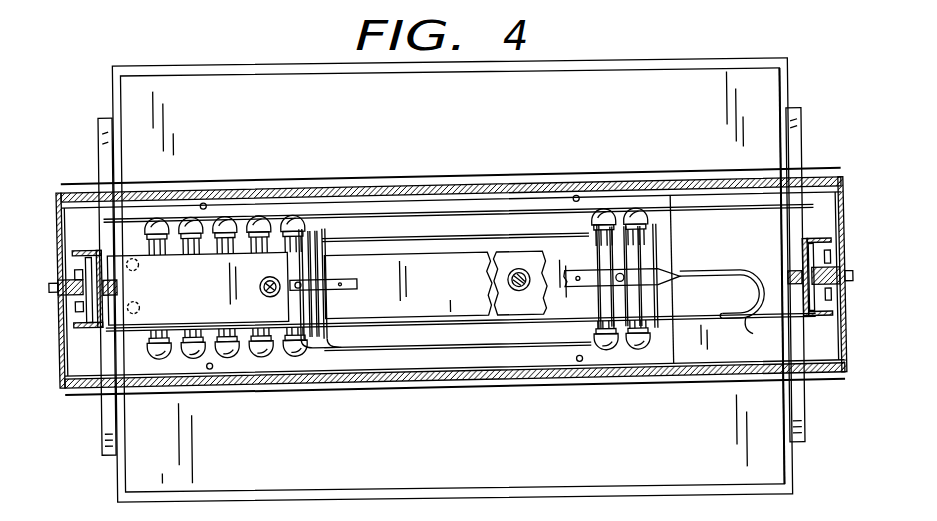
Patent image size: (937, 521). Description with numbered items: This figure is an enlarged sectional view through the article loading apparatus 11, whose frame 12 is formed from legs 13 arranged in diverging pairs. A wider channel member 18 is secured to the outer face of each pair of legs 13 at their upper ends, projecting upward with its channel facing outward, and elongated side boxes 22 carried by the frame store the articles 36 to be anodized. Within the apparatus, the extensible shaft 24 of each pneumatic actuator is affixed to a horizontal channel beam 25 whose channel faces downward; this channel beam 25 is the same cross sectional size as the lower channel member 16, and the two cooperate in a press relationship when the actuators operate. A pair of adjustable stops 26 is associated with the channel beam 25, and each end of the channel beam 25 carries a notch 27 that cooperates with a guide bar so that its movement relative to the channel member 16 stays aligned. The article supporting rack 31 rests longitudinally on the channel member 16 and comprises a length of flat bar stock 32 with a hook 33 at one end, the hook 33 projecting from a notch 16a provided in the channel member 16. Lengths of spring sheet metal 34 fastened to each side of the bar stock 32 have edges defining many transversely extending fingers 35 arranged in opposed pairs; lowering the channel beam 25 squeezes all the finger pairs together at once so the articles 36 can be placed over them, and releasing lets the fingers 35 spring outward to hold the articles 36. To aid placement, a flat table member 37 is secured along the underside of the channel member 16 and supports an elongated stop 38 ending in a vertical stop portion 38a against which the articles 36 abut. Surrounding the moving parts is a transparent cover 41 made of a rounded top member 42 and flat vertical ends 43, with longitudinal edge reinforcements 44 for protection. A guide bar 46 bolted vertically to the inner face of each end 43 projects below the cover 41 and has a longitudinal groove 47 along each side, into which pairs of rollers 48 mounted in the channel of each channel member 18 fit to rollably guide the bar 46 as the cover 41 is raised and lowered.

The article loading apparatus 11 is at (459, 265).
The frame 12 is at (824, 49).
The legs 13 is at (107, 117).
The channel member 16 is at (427, 253).
The notch 16a is at (737, 301).
The channel member 18 is at (88, 328).
The side boxes 22 is at (643, 61).
The extensible shaft 24 is at (262, 289).
The channel beam 25 is at (222, 293).
The adjustable stops 26 is at (140, 265).
The notch 27 is at (118, 285).
The article supporting rack 31 is at (679, 258).
The flat bar stock 32 is at (688, 274).
The hook 33 is at (752, 324).
The spring sheet metal 34 is at (352, 281).
The fingers 35 is at (325, 240).
The articles 36 is at (292, 212).
The table member 37 is at (470, 212).
The stop 38 is at (492, 235).
The vertical stop portion 38a is at (372, 400).
The transparent cover 41 is at (313, 390).
The top member 42 is at (338, 188).
The ends 43 is at (57, 377).
The longitudinal edge reinforcements 44 is at (558, 188).
The guide bar 46 is at (73, 290).
The longitudinal groove 47 is at (76, 278).
The rollers 48 is at (73, 262).